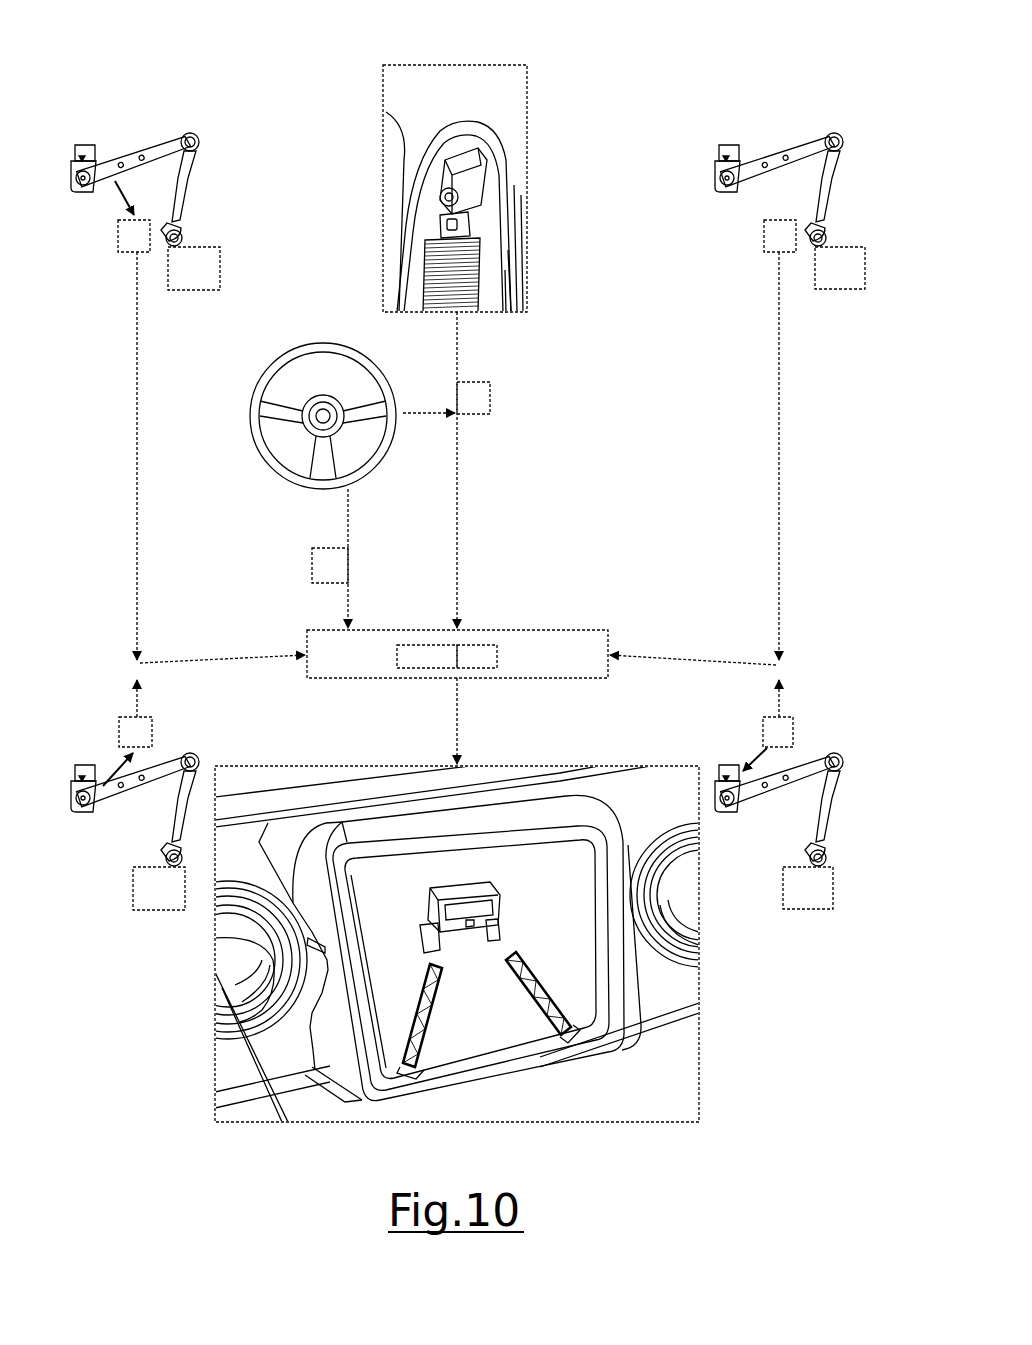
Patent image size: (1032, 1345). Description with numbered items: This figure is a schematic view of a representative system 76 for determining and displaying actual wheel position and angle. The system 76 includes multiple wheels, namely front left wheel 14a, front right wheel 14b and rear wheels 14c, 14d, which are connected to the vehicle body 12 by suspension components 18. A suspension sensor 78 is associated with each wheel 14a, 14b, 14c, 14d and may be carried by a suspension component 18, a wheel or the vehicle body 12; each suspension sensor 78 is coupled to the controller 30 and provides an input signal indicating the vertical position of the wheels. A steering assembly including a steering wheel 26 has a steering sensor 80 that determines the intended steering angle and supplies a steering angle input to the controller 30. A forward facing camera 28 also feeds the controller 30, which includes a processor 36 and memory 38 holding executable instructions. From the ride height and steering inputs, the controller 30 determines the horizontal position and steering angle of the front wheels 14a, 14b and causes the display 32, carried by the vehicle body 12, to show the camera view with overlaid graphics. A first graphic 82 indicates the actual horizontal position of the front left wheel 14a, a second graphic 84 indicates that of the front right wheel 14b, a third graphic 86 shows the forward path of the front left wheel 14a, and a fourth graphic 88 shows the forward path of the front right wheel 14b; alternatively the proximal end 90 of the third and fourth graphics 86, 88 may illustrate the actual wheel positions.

The vehicle body 12 is at (504, 188).
The front left wheel 14a is at (840, 279).
The front right wheel 14b is at (187, 279).
The rear wheel 14c is at (818, 908).
The rear wheel 14d is at (157, 909).
The suspension component 18 is at (142, 138).
The steering wheel 26 is at (300, 344).
The camera 28 is at (515, 229).
The controller 30 is at (459, 621).
The display 32 is at (469, 952).
The processor 36 is at (404, 650).
The memory 38 is at (482, 650).
The system 76 is at (650, 68).
The suspension sensor 78 is at (124, 240).
The steering sensor 80 is at (312, 574).
The first graphic 82 is at (583, 1026).
The second graphic 84 is at (398, 1058).
The third graphic 86 is at (562, 1004).
The fourth graphic 88 is at (412, 1036).
The proximal end 90 is at (428, 1077).